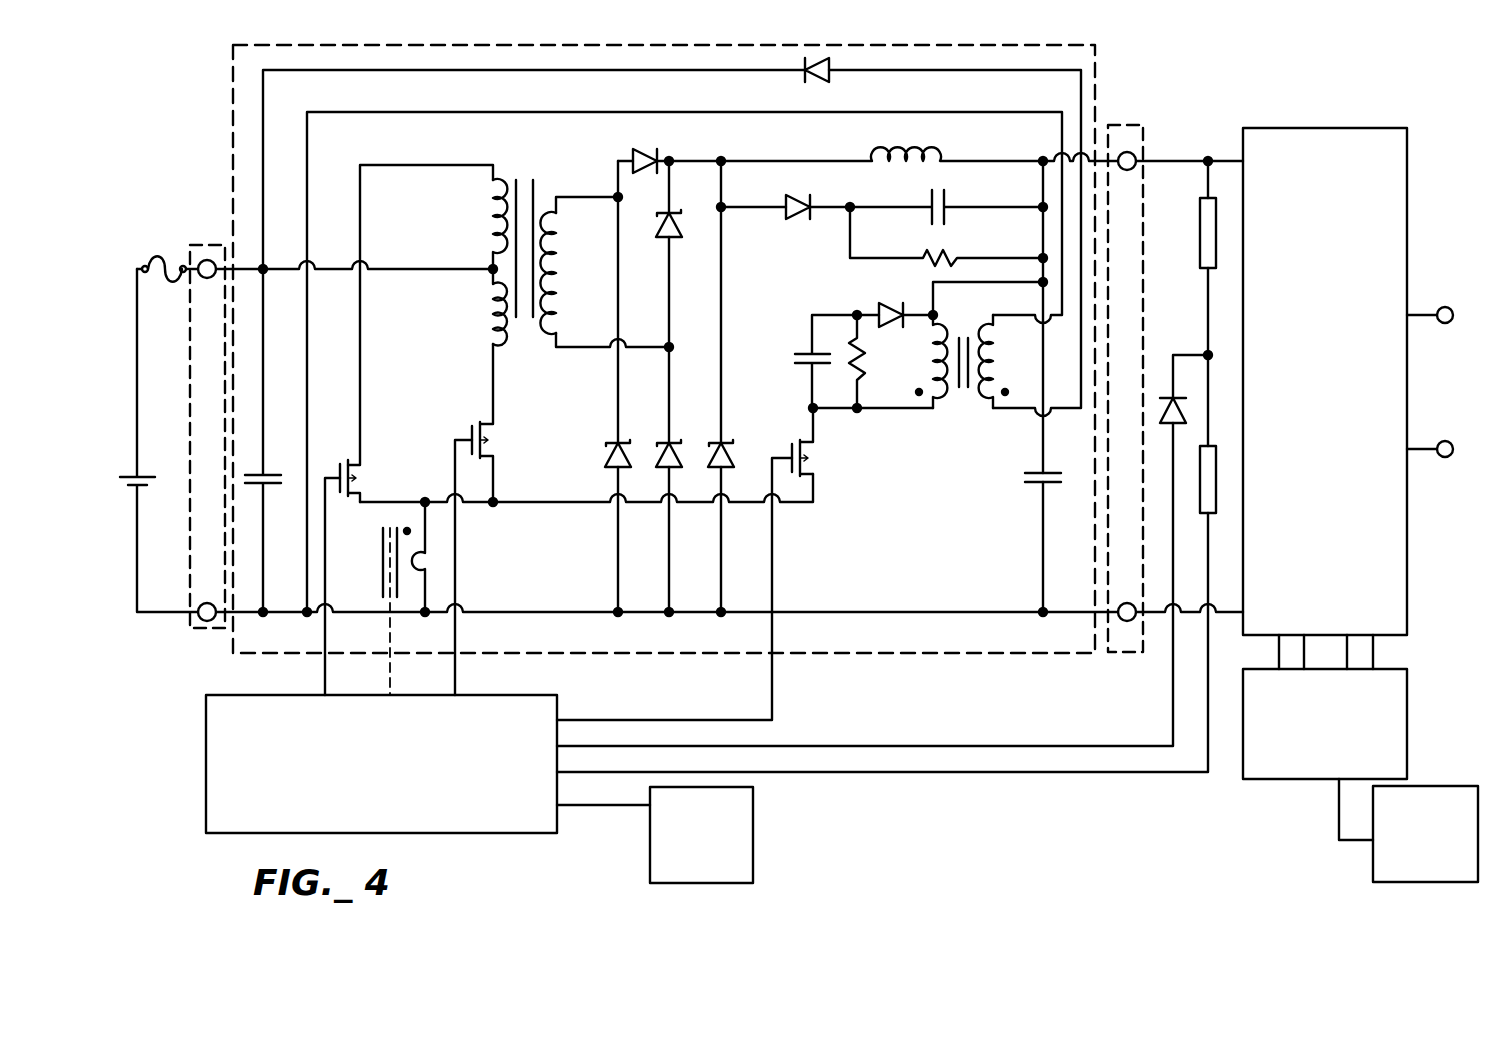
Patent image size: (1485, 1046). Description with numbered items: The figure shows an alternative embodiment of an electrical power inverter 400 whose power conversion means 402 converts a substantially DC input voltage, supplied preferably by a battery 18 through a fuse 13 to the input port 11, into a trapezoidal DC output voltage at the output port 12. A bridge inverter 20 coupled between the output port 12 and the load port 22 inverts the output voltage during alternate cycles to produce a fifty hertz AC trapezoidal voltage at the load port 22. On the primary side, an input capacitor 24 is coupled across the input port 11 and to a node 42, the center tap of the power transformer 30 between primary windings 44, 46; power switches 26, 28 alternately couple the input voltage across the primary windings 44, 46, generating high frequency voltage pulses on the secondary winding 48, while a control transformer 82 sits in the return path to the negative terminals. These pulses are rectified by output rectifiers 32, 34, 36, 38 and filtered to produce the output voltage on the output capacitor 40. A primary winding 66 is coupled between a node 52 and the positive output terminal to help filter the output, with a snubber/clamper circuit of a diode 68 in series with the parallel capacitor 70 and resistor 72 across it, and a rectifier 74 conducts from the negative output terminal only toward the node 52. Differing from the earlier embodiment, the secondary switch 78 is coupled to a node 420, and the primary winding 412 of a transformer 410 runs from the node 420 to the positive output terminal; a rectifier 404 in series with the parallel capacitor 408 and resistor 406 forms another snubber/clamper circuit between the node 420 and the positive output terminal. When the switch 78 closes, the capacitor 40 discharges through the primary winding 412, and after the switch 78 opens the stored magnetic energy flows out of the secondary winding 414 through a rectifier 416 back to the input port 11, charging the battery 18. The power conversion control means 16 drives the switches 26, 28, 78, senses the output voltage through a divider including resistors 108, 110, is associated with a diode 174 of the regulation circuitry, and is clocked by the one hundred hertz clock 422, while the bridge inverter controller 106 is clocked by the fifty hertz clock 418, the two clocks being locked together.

The input port 11 is at (198, 245).
The output port 12 is at (1148, 140).
The fuse 13 is at (156, 258).
The power conversion control means 16 is at (381, 764).
The battery 18 is at (139, 477).
The bridge inverter 20 is at (1325, 398).
The load port 22 is at (1445, 306).
The input capacitor 24 is at (267, 475).
The power switch 26 is at (346, 462).
The power switch 28 is at (478, 424).
The power transformer 30 is at (524, 172).
The output rectifier 32 is at (610, 442).
The output rectifier 34 is at (640, 150).
The output rectifier 36 is at (664, 442).
The output rectifier 38 is at (676, 210).
The output capacitor 40 is at (1040, 474).
The node 42 is at (490, 266).
The primary winding 44 is at (488, 232).
The primary winding 46 is at (488, 322).
The secondary winding 48 is at (560, 240).
The node 52 is at (722, 155).
The primary winding 66 is at (876, 153).
The diode 68 is at (792, 198).
The capacitor 70 is at (946, 205).
The resistor 72 is at (957, 256).
The rectifier 74 is at (728, 442).
The secondary switch 78 is at (800, 438).
The control transformer 82 is at (382, 560).
The bridge inverter controller 106 is at (1325, 724).
The resistor 108 is at (1198, 230).
The resistor 110 is at (1212, 520).
The diode 174 is at (1165, 395).
The electrical power inverter 400 is at (1047, 812).
The power conversion means 402 is at (233, 160).
The rectifier 404 is at (884, 305).
The resistor 406 is at (862, 352).
The capacitor 408 is at (796, 356).
The transformer 410 is at (966, 405).
The primary winding 412 is at (935, 410).
The secondary winding 414 is at (989, 318).
The rectifier 416 is at (806, 78).
The 50 Hz clock 418 is at (1408, 830).
The node 420 is at (816, 415).
The 100 Hz clock 422 is at (655, 835).